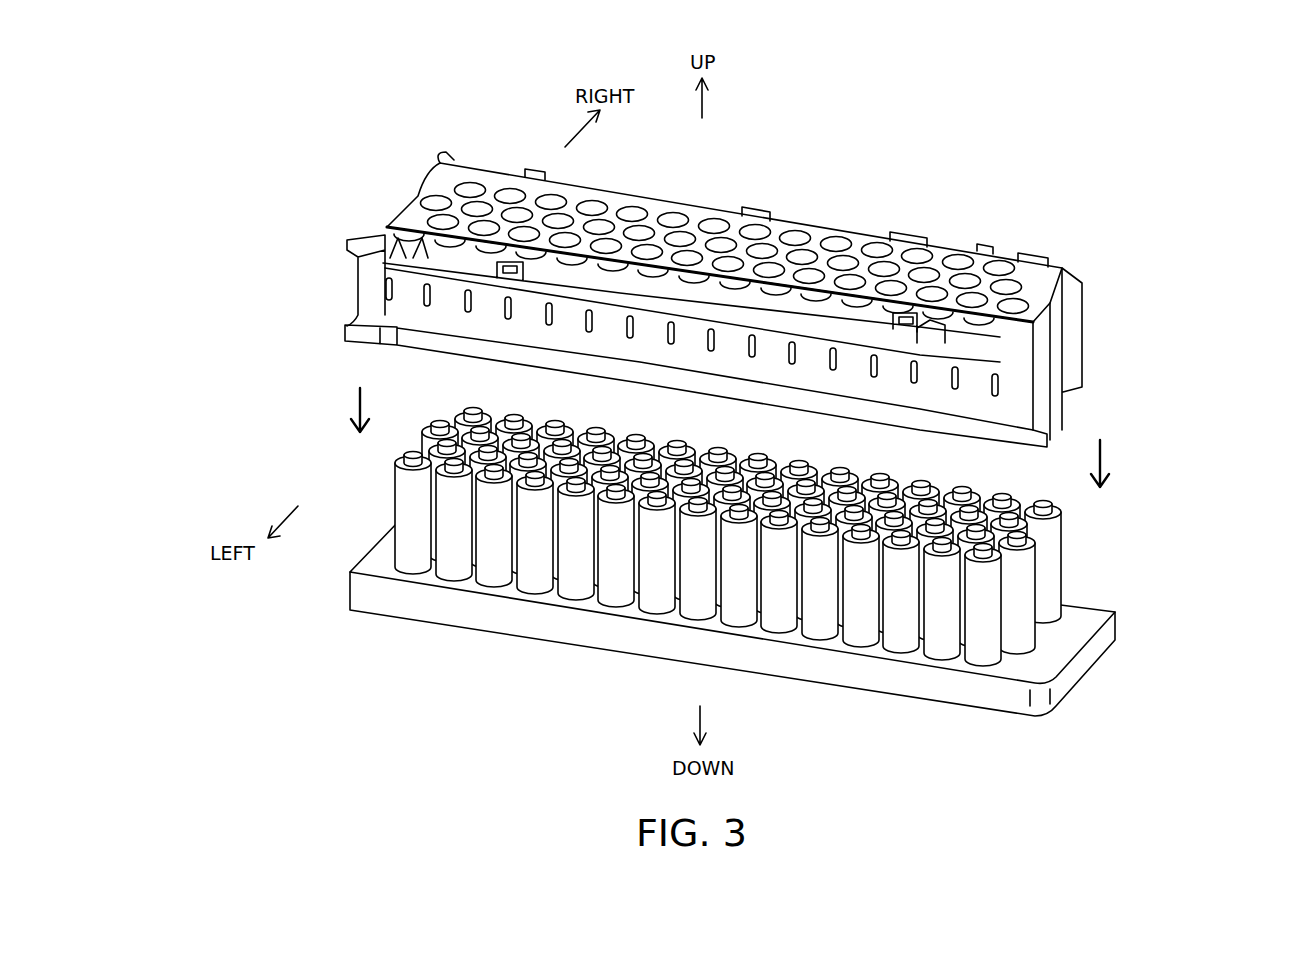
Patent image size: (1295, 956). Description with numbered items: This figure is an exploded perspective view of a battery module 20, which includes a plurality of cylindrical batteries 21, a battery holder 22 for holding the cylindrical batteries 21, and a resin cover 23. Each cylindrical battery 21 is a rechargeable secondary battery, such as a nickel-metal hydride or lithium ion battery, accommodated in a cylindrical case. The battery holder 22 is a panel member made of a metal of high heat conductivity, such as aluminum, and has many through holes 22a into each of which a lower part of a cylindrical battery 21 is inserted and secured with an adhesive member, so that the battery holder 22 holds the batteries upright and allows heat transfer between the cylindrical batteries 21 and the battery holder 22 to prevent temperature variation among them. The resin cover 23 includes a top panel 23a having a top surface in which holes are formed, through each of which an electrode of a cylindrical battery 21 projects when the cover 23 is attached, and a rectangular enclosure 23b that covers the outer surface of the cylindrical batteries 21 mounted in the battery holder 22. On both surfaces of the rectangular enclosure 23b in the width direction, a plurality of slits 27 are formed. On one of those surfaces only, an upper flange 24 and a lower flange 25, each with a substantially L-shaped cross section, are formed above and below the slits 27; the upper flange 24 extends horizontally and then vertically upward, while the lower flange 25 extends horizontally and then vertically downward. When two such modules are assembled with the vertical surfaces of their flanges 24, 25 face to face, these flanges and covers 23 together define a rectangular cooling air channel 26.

The battery module 20 is at (1167, 259).
The cylindrical battery 21 is at (1067, 562).
The battery holder 22 is at (1110, 633).
The through hole 22a is at (1000, 657).
The resin cover 23 is at (997, 247).
The top panel 23a is at (823, 237).
The rectangular enclosure 23b is at (777, 303).
The upper flange 24 is at (347, 253).
The lower flange 25 is at (357, 338).
The cooling air channel 26 is at (357, 302).
The slit 27 is at (463, 300).